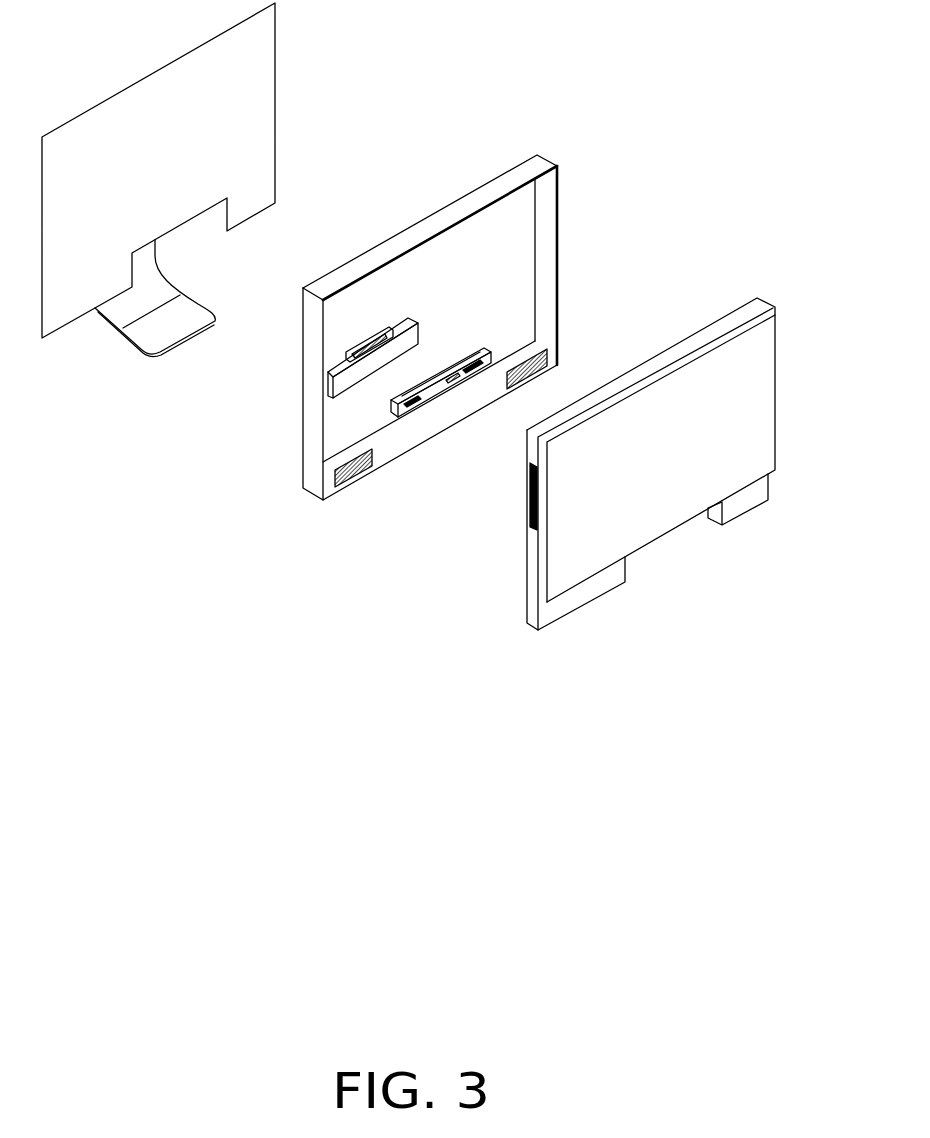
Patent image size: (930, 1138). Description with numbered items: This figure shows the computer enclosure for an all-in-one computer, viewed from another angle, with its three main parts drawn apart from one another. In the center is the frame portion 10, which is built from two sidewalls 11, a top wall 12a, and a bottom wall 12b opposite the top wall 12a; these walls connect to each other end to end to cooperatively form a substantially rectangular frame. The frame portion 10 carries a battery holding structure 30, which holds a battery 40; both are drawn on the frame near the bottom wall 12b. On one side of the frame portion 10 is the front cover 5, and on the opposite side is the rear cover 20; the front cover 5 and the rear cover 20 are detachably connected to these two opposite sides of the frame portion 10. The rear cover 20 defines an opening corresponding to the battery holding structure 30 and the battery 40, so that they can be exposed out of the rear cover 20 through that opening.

The front cover 5 is at (633, 520).
The frame portion 10 is at (470, 316).
The sidewalls 11 is at (557, 220).
The top wall 12a is at (403, 242).
The bottom wall 12b is at (392, 447).
The rear cover 20 is at (253, 112).
The battery holding structure 30 is at (440, 392).
The battery 40 is at (342, 378).